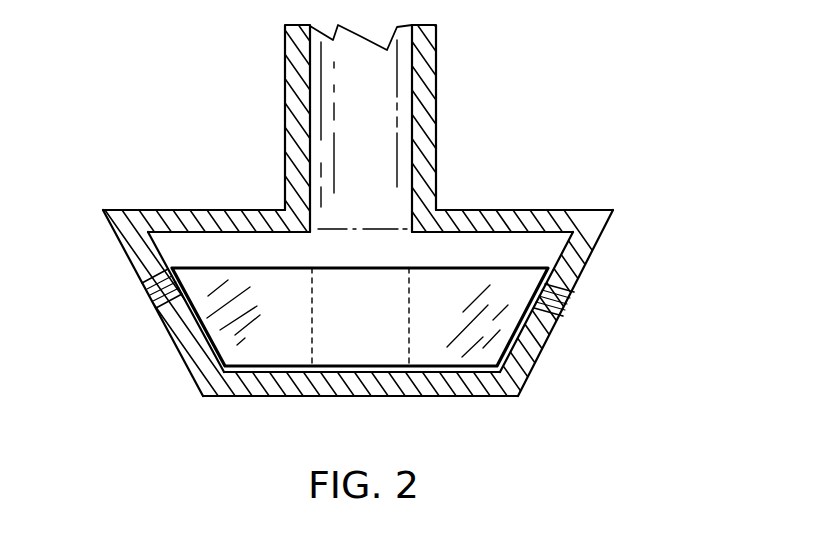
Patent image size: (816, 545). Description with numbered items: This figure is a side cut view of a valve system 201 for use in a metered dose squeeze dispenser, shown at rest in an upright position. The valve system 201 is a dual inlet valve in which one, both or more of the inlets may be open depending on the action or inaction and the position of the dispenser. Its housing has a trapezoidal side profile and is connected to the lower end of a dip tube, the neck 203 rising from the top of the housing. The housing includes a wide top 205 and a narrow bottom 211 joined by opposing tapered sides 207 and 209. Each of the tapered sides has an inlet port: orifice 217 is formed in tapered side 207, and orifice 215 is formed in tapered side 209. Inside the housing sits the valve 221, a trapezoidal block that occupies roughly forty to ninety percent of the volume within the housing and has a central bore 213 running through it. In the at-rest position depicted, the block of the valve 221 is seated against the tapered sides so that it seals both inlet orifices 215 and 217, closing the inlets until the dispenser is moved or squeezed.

The valve system 201 is at (355, 243).
The neck / tubular inlet 203 is at (436, 112).
The wide top 205 is at (473, 210).
The tapered side 207 is at (540, 367).
The tapered side 209 is at (190, 360).
The narrow bottom 211 is at (267, 395).
The central bore 213 is at (354, 295).
The inlet orifice 215 is at (163, 307).
The inlet orifice 217 is at (558, 310).
The valve 221 is at (203, 257).